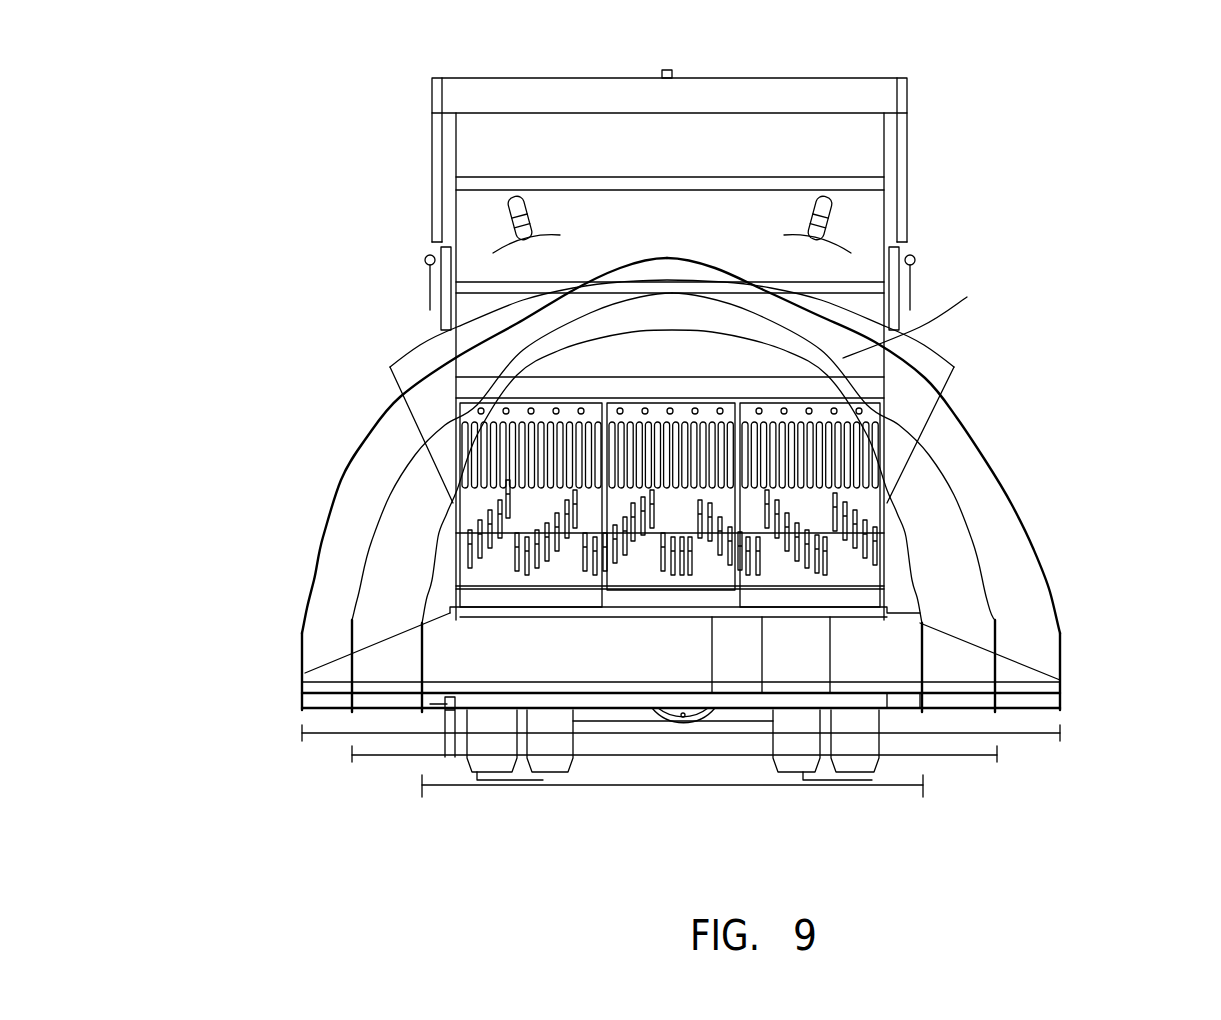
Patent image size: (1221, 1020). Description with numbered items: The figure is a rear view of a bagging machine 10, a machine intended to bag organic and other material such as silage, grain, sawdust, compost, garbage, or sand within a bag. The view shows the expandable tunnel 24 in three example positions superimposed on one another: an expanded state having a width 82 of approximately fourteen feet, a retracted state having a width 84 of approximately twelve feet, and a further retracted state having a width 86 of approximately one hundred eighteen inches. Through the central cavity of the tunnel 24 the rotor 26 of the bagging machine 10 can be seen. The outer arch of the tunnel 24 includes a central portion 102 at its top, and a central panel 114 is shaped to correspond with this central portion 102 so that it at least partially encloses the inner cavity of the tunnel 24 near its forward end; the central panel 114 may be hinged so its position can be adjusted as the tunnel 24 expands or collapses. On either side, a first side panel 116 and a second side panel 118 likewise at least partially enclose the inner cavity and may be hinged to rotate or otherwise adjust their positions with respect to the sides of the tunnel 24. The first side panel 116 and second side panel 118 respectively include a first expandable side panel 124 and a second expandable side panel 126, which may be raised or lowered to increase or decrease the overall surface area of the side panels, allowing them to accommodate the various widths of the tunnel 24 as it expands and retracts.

The bagging machine 10 is at (363, 122).
The tunnel 24 is at (390, 367).
The rotor 26 is at (800, 507).
The central portion 102 is at (967, 297).
The central panel 114 is at (537, 333).
The first side panel 116 is at (395, 560).
The second side panel 118 is at (950, 555).
The first expandable side panel 124 is at (357, 478).
The second expandable side panel 126 is at (988, 473).
The width 82 is at (302, 741).
The width 84 is at (352, 762).
The width 86 is at (463, 785).